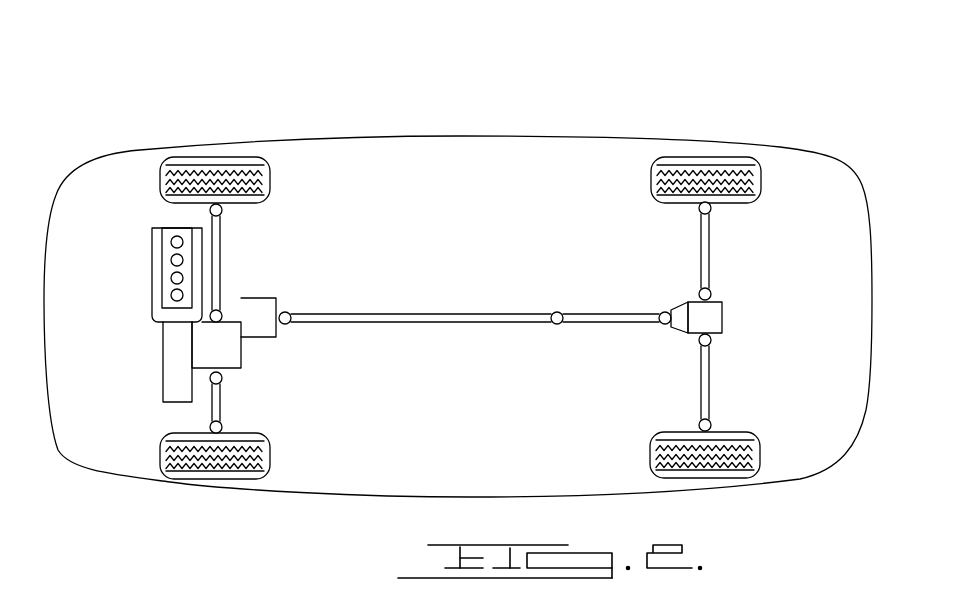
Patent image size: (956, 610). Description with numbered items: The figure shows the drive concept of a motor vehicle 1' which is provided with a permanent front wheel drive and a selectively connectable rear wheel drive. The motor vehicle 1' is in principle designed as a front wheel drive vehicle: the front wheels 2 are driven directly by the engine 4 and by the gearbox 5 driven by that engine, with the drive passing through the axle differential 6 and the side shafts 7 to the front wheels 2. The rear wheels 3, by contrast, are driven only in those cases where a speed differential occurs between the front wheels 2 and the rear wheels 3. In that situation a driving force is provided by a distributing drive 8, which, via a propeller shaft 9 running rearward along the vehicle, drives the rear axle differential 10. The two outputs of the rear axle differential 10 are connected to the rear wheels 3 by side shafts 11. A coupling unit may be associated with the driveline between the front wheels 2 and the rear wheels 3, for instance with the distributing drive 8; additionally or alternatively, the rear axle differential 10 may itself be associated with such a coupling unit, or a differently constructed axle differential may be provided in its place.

The motor vehicle 1' is at (458, 316).
The front wheels 2 is at (268, 180).
The rear wheels 3 is at (652, 178).
The engine 4 is at (155, 240).
The gearbox 5 is at (172, 378).
The axle differential 6 is at (225, 362).
The side shafts 7 is at (221, 247).
The distributing drive 8 is at (267, 311).
The propeller shaft 9 is at (402, 323).
The rear axle differential 10 is at (712, 321).
The side shafts 11 is at (700, 260).